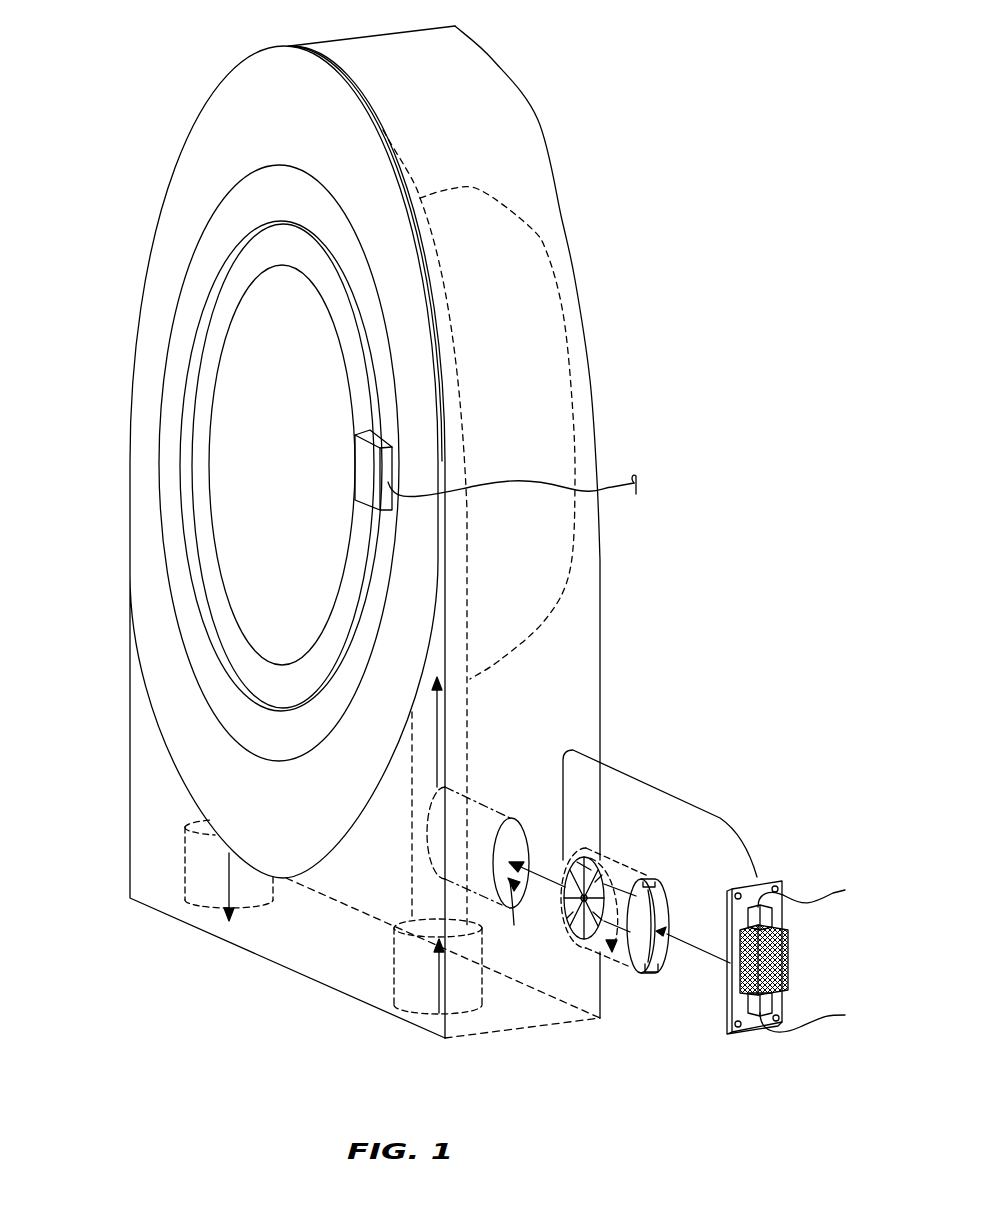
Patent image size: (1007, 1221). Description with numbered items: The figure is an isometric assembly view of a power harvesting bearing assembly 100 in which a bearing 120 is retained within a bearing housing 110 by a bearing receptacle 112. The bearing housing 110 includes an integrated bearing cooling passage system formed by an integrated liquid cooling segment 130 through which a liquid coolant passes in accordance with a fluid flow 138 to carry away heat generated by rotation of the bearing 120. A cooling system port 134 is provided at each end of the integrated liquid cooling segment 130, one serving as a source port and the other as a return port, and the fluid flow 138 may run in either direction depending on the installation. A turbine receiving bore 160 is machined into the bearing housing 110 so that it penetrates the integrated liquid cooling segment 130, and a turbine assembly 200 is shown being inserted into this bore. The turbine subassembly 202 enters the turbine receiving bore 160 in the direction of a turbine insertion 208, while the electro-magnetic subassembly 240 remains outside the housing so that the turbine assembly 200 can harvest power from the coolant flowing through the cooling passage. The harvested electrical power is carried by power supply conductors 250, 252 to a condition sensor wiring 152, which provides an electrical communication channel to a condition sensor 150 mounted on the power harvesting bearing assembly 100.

The power harvesting bearing assembly 100 is at (597, 102).
The bearing housing 110 is at (437, 110).
The bearing receptacle 112 is at (192, 473).
The bearing 120 is at (490, 268).
The integrated liquid cooling segment 130 is at (445, 787).
The cooling system port 134 is at (183, 897).
The fluid flow 138 is at (437, 733).
The condition sensor 150 is at (369, 433).
The condition sensor wiring 152 is at (610, 487).
The turbine receiving bore 160 is at (514, 925).
The turbine assembly 200 is at (675, 797).
The turbine subassembly 202 is at (617, 966).
The turbine insertion 208 is at (520, 912).
The electro-magnetic subassembly 240 is at (760, 1039).
The power supply conductor 250 is at (810, 1027).
The power supply conductor 252 is at (810, 900).